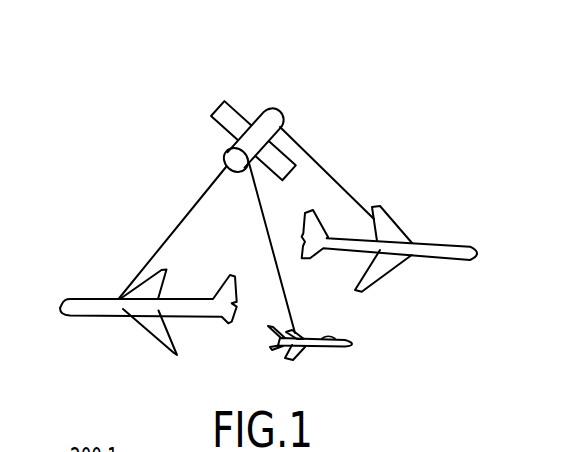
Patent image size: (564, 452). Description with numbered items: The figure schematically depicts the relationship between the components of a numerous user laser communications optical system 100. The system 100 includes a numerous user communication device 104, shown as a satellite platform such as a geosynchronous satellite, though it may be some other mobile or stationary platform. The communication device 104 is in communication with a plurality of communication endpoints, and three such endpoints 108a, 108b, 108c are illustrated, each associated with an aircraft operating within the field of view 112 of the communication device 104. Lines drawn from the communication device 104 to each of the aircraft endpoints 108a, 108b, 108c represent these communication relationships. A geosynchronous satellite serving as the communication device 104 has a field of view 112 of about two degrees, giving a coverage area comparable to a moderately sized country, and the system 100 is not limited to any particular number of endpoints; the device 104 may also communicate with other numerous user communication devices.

The numerous user laser communications optical system 100 is at (134, 101).
The numerous user communication device 104 is at (283, 122).
The field of view 112 is at (338, 169).
The communication endpoint 108a is at (103, 299).
The communication endpoint 108b is at (330, 347).
The communication endpoint 108c is at (427, 243).